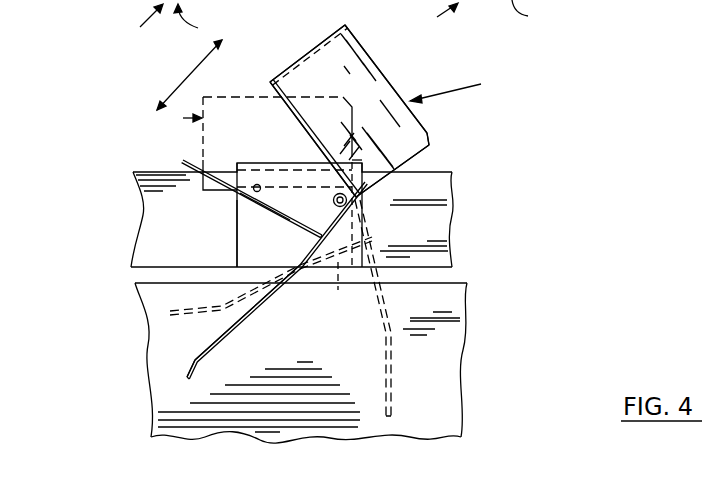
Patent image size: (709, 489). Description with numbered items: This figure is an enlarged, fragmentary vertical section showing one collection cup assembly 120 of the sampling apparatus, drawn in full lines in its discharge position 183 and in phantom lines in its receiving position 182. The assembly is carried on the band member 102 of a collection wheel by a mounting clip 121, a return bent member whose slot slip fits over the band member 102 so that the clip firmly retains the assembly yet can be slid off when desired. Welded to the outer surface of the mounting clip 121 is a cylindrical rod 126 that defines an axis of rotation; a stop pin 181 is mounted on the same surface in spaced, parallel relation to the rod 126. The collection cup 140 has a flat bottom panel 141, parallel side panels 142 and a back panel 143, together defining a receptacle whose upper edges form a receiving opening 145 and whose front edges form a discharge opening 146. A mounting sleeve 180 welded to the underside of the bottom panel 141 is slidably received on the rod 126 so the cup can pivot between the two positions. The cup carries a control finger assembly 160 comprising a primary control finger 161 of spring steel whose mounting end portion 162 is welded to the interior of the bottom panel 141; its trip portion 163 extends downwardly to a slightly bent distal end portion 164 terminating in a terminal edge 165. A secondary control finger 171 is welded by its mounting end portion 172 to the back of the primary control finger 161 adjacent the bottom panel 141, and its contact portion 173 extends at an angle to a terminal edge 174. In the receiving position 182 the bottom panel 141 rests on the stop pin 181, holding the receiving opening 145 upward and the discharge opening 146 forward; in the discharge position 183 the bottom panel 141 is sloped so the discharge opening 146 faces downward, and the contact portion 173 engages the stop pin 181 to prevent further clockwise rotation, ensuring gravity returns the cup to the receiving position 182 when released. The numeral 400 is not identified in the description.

The band member 102 is at (433, 203).
The collection cup assembly 120 is at (335, 56).
The mounting clip 121 is at (250, 239).
The rod 126 is at (365, 201).
The collection cup 140 is at (373, 61).
The bottom panel 141 is at (292, 122).
The side panels 142 is at (392, 128).
The back panel 143 is at (327, 40).
The receiving opening 145 is at (391, 84).
The discharge opening 146 is at (378, 184).
The control finger assembly 160 is at (537, 13).
The primary control finger 161 is at (272, 302).
The mounting end portion 162 is at (362, 123).
The trip portion 163 is at (262, 315).
The distal end portion 164 is at (232, 333).
The terminal edge 165 is at (430, 404).
The secondary control finger 171 is at (228, 189).
The mounting end portion 172 is at (322, 236).
The contact portion 173 is at (264, 207).
The terminal edge 174 is at (183, 161).
The mounting sleeve 180 is at (333, 201).
The stop pin 181 is at (257, 183).
The receiving position 182 is at (165, 118).
The discharge position 183 is at (432, 143).
The assembly 400 is at (262, 4).